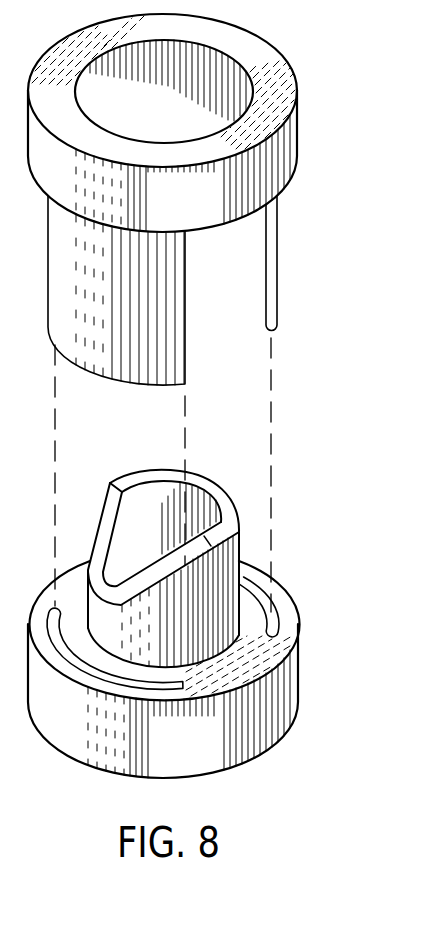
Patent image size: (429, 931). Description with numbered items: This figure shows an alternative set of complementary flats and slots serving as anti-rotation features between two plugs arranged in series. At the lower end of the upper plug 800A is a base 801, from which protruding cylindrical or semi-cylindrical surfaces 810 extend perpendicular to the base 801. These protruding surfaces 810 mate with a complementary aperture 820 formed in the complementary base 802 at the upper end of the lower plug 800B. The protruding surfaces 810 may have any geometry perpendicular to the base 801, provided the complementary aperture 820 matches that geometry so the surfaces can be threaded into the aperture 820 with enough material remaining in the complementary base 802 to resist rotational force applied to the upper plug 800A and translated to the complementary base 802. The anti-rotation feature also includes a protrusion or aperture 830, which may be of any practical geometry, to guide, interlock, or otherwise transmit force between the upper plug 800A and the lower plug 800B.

The base 801 is at (298, 122).
The upper plug 800A is at (218, 211).
The protruding cylindrical or semi-cylindrical surfaces 810 is at (280, 250).
The protrusion or aperture 830 is at (242, 540).
The complementary aperture 820 is at (280, 615).
The complementary base 802 is at (298, 678).
The lower plug 800B is at (220, 753).